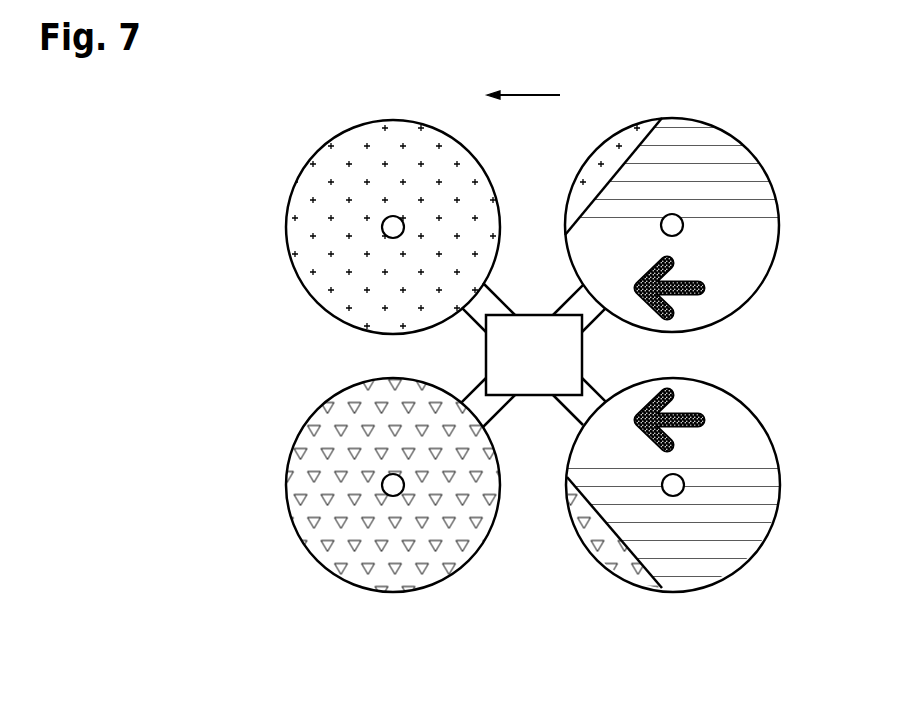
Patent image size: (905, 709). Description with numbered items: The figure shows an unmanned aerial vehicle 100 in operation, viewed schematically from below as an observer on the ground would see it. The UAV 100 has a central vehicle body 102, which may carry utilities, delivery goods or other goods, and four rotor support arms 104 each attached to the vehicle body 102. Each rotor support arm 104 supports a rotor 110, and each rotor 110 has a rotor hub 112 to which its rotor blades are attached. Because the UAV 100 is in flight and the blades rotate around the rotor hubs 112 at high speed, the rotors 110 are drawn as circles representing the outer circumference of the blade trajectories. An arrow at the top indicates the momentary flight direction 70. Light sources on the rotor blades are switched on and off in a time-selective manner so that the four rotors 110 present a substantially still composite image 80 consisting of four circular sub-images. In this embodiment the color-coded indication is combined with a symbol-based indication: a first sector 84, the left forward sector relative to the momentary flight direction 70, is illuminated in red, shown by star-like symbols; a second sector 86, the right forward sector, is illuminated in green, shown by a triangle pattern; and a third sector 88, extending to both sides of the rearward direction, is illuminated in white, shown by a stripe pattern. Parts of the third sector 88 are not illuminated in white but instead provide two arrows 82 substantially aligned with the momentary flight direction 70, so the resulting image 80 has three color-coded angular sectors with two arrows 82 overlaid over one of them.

The momentary flight direction 70 is at (531, 95).
The image 80 is at (281, 583).
The arrows 82 is at (705, 287).
The first sector 84 is at (300, 215).
The second sector 86 is at (300, 466).
The third sector 88 is at (763, 218).
The unmanned aerial vehicle 100 is at (535, 193).
The vehicle body 102 is at (512, 367).
The rotor support arms 104 is at (572, 420).
The rotors 110 is at (304, 127).
The rotor hub 112 is at (394, 216).